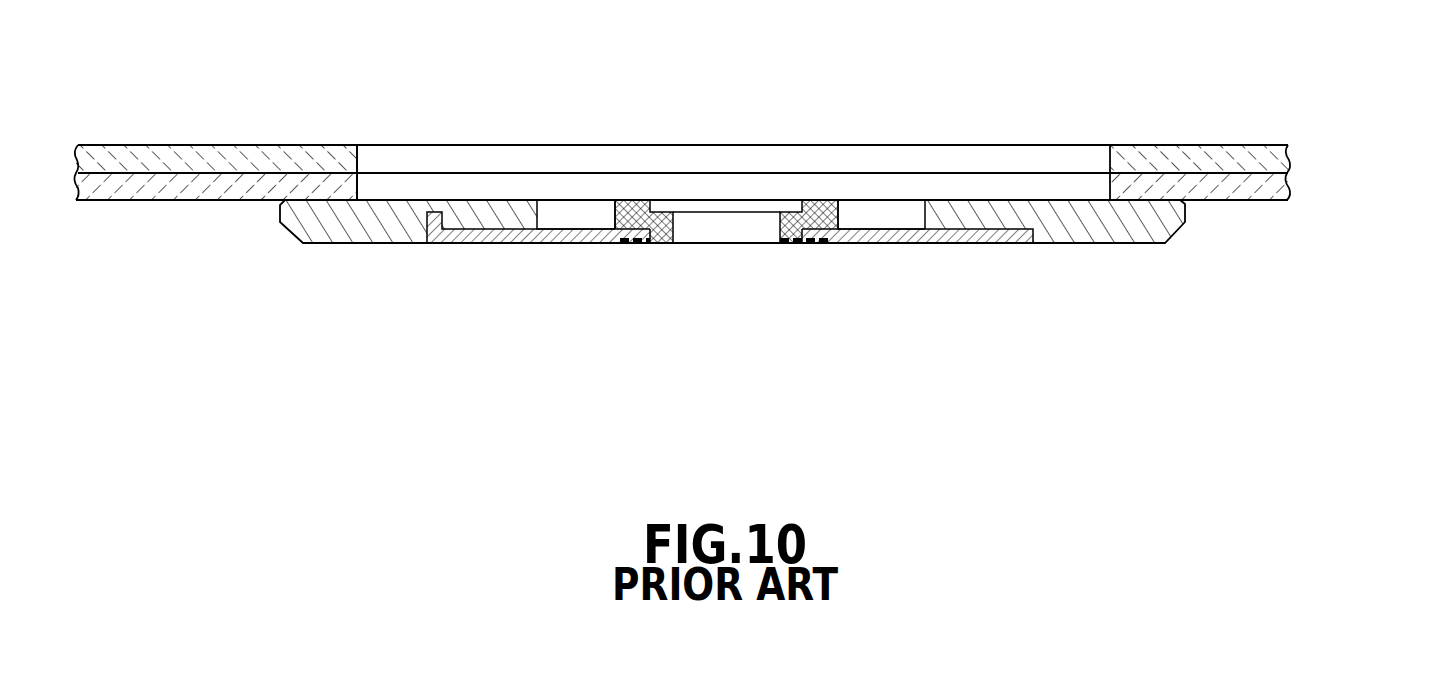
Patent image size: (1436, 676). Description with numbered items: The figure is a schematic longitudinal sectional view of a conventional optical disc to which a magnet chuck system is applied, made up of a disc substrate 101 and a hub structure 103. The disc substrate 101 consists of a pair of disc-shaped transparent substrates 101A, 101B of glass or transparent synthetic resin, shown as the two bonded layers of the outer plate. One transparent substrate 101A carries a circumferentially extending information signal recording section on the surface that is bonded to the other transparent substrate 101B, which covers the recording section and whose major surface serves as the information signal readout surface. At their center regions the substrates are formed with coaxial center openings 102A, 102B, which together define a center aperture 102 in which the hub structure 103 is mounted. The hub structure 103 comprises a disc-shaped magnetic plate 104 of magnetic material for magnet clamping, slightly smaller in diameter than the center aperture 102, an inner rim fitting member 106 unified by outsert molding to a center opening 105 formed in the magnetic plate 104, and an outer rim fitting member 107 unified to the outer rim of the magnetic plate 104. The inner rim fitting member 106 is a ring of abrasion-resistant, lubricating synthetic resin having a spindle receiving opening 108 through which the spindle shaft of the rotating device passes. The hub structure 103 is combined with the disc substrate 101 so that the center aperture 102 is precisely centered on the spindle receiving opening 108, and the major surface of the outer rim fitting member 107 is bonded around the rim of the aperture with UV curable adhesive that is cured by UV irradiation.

The disc substrate 101 is at (755, 162).
The transparent substrate 101A is at (1242, 205).
The transparent substrate 101B is at (1245, 145).
The center aperture 102 is at (821, 109).
The center opening 102A is at (1105, 188).
The center opening 102B is at (1108, 176).
The hub structure 103 is at (732, 340).
The magnetic plate 104 is at (890, 244).
The center opening 105 is at (807, 244).
The inner rim fitting member 106 is at (744, 318).
The outer rim fitting member 107 is at (1090, 245).
The spindle receiving opening 108 is at (680, 235).